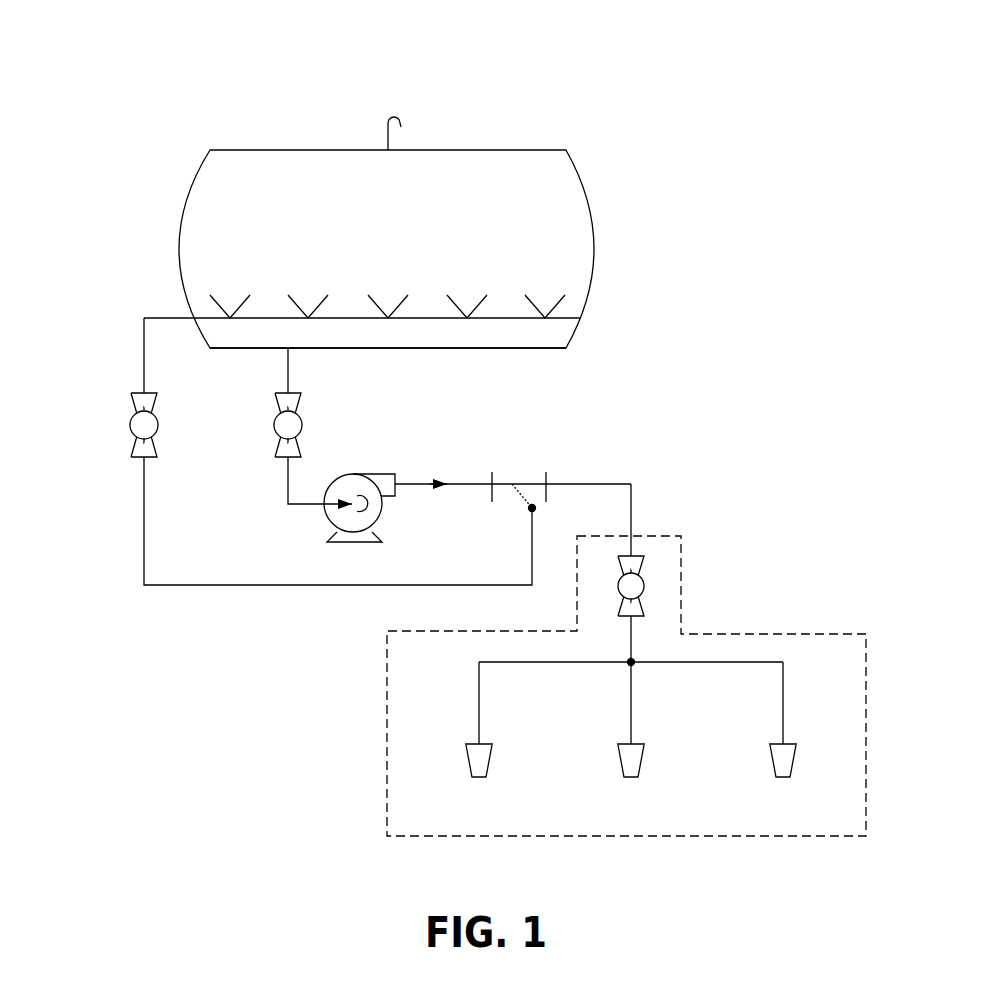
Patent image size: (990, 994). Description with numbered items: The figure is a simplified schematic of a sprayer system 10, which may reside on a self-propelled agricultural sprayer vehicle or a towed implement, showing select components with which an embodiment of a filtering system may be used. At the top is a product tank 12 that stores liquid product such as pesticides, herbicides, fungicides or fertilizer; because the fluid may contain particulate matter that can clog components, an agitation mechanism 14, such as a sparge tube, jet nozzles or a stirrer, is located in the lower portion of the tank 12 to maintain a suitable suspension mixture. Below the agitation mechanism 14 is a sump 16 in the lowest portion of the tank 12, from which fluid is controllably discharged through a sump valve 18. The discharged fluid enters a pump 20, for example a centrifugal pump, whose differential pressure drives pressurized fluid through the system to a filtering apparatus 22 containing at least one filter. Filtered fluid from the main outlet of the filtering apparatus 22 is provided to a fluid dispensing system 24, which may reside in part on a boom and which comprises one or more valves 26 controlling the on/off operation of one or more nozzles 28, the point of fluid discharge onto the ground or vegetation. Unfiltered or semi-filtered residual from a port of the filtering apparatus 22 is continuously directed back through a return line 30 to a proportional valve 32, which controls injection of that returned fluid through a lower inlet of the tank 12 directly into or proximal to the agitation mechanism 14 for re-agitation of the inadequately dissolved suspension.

The sprayer system 10 is at (748, 110).
The product tank 12 is at (587, 196).
The agitation mechanism 14 is at (598, 312).
The sump 16 is at (586, 338).
The sump valve 18 is at (297, 419).
The pump 20 is at (353, 472).
The filtering apparatus 22 is at (523, 458).
The fluid dispensing system 24 is at (867, 634).
The valves 26 is at (643, 587).
The nozzles 28 is at (789, 753).
The return line 30 is at (255, 585).
The proportional valve 32 is at (130, 428).